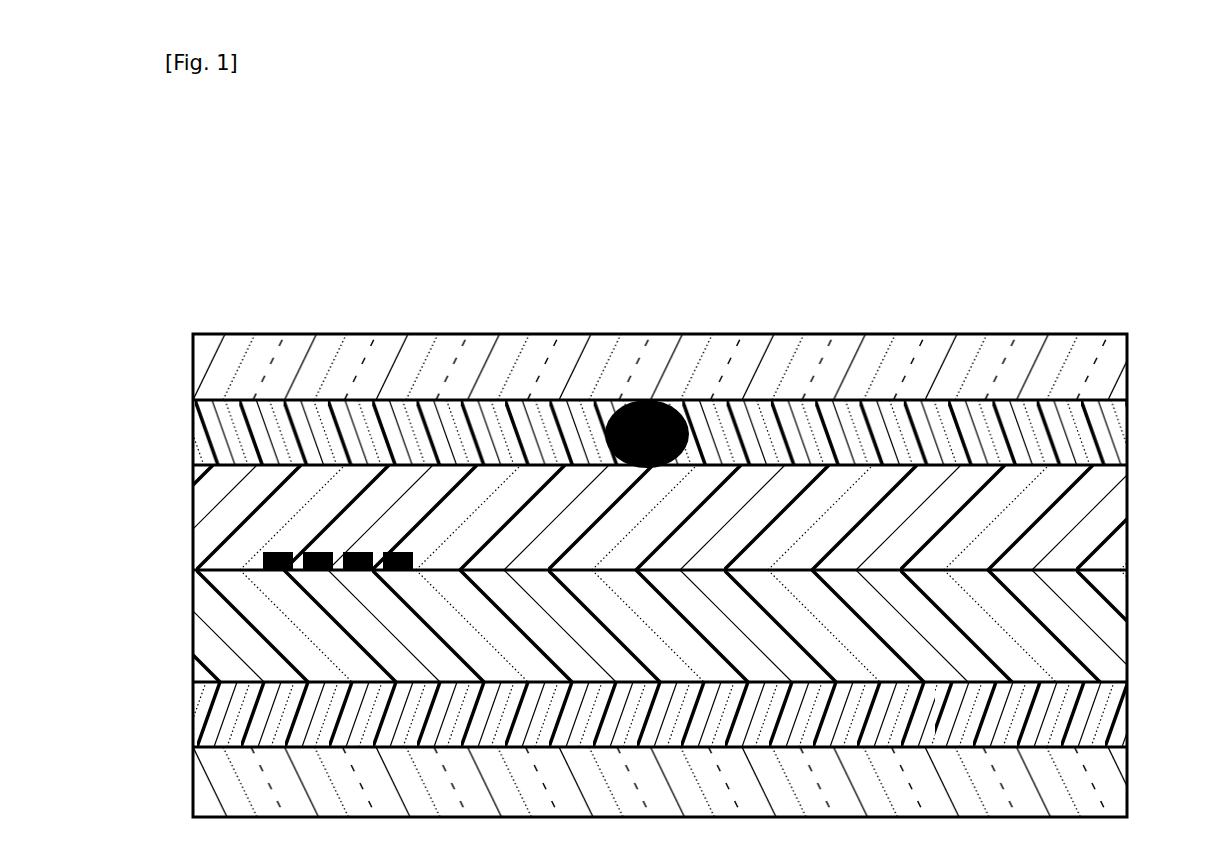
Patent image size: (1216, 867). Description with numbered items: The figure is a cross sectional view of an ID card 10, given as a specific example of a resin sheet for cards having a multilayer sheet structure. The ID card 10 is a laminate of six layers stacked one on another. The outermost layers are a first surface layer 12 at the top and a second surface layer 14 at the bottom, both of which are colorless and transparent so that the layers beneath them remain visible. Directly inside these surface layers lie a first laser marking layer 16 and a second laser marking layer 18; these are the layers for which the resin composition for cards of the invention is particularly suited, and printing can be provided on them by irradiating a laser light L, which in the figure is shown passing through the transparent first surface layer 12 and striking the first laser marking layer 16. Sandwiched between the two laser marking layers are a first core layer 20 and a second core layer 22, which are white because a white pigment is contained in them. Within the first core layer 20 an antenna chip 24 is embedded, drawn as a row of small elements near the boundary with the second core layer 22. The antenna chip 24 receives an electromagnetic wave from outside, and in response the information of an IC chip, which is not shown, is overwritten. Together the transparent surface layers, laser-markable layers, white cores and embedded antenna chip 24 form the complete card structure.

The ID card 10 is at (1072, 228).
The first surface layer 12 is at (1128, 357).
The second surface layer 14 is at (1128, 782).
The first laser marking layer 16 is at (1128, 434).
The second laser marking layer 18 is at (1128, 707).
The first core layer 20 is at (1128, 509).
The second core layer 22 is at (1128, 639).
The antenna chip 24 is at (277, 552).
The laser light L is at (680, 393).